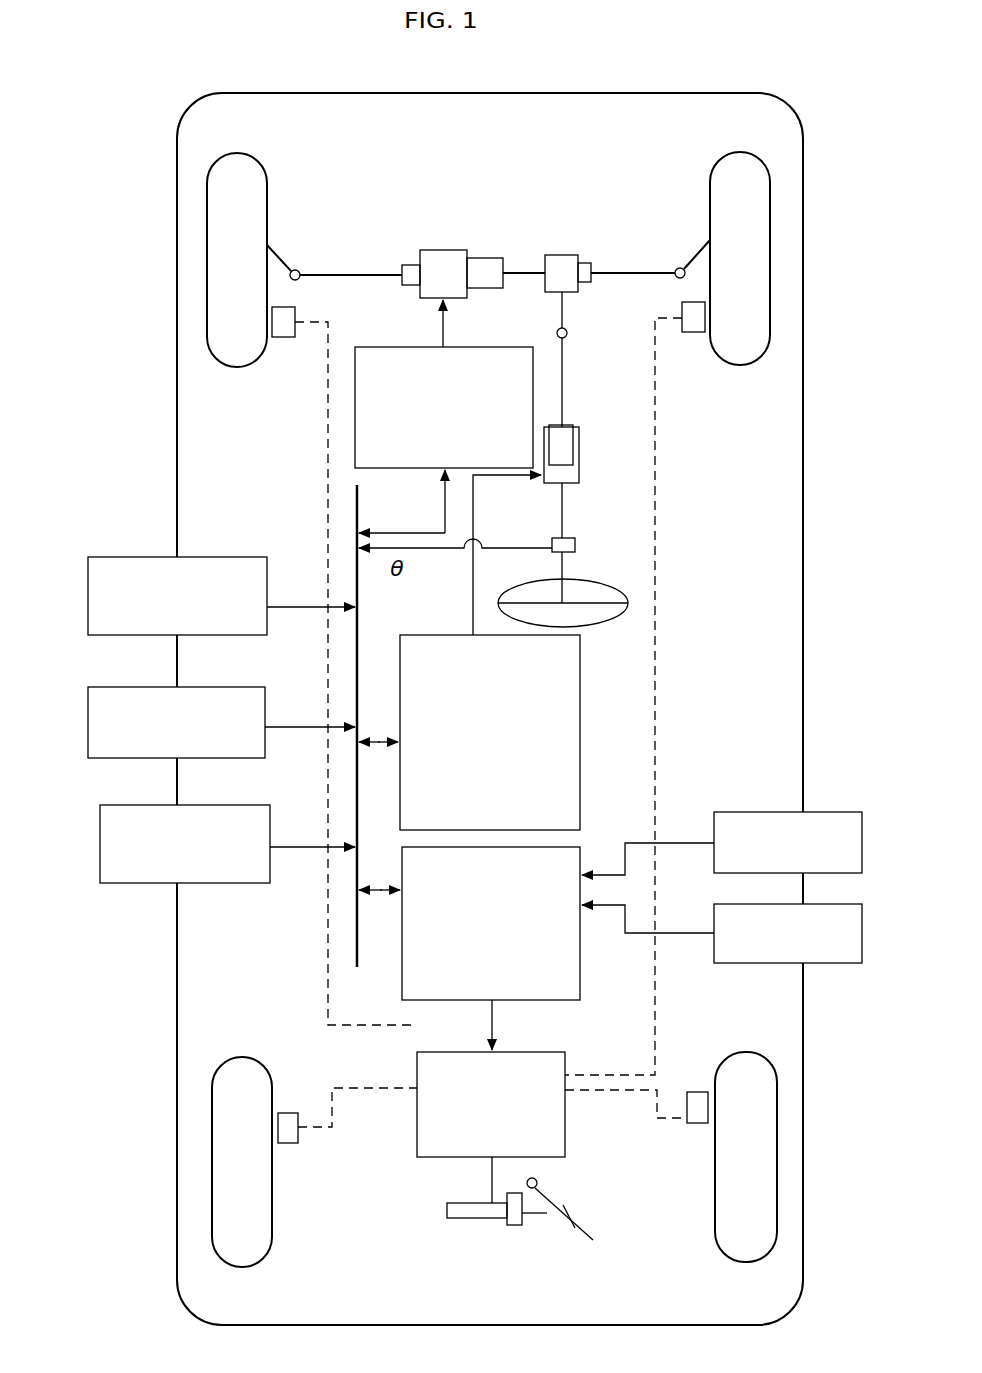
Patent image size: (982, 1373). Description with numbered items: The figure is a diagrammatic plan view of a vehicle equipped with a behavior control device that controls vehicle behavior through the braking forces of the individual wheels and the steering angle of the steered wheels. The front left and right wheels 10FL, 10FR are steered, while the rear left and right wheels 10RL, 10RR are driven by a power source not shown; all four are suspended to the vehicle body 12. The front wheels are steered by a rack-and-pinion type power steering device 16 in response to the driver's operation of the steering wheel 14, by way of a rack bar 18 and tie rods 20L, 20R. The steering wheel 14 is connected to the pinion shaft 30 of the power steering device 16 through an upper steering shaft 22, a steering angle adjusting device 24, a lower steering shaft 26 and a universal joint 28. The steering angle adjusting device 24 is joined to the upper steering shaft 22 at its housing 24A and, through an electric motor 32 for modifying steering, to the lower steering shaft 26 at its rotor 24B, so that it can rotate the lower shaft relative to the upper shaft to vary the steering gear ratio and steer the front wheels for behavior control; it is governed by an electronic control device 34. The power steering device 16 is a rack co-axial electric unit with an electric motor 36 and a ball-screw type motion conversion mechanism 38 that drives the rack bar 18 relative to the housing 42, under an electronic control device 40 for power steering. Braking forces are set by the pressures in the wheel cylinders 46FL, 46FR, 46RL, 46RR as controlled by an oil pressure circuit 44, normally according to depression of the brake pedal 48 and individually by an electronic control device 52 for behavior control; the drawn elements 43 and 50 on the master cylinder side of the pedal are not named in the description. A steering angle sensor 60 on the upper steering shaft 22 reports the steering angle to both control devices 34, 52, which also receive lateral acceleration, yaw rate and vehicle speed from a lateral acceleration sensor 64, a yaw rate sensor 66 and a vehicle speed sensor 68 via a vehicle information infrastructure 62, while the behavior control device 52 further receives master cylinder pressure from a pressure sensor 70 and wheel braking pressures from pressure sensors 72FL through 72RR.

The front left wheel 10FL is at (206, 272).
The front right wheel 10FR is at (770, 272).
The rear left wheel 10RL is at (224, 1168).
The rear right wheel 10RR is at (777, 1166).
The vehicle body 12 is at (803, 657).
The steering wheel 14 is at (600, 622).
The rack-and-pinion type power steering device 16 is at (488, 261).
The rack bar 18 is at (355, 275).
The tie rod 20L is at (284, 256).
The tie rod 20R is at (698, 250).
The upper steering shaft 22 is at (559, 572).
The steering angle adjusting device 24 is at (568, 475).
The housing 24A is at (580, 487).
The rotor 24B is at (579, 466).
The lower steering shaft 26 is at (563, 362).
The universal joint 28 is at (557, 333).
The pinion shaft 30 is at (568, 310).
The electric motor 32 is at (569, 444).
The electronic control device 34 is at (469, 652).
The electric motor 36 is at (444, 250).
The ball-screw type motion conversion mechanism 38 is at (485, 288).
The electronic control device 40 is at (444, 416).
The housing 42 is at (406, 285).
The master cylinder 43 is at (468, 1220).
The oil pressure circuit 44 is at (491, 1104).
The wheel cylinder 46FL is at (284, 337).
The wheel cylinder 46FR is at (693, 332).
The wheel cylinder 46RL is at (290, 1143).
The wheel cylinder 46RR is at (696, 1123).
The brake pedal 48 is at (563, 1206).
The braking device 50 is at (504, 1205).
The electronic control device 52 is at (469, 948).
The steering angle sensor 60 is at (575, 560).
The vehicle information infrastructure 62 is at (357, 933).
The lateral acceleration sensor 64 is at (210, 557).
The yaw rate sensor 66 is at (88, 734).
The vehicle speed sensor 68 is at (100, 859).
The pressure sensor 70 is at (780, 812).
The pressure sensor 72FL is at (722, 977).
The pressure sensor 72RR is at (750, 963).